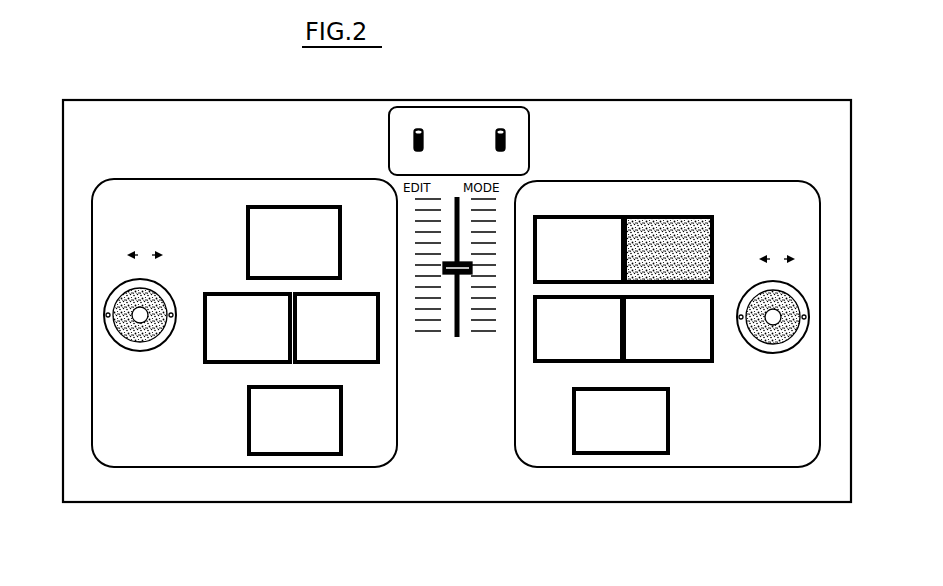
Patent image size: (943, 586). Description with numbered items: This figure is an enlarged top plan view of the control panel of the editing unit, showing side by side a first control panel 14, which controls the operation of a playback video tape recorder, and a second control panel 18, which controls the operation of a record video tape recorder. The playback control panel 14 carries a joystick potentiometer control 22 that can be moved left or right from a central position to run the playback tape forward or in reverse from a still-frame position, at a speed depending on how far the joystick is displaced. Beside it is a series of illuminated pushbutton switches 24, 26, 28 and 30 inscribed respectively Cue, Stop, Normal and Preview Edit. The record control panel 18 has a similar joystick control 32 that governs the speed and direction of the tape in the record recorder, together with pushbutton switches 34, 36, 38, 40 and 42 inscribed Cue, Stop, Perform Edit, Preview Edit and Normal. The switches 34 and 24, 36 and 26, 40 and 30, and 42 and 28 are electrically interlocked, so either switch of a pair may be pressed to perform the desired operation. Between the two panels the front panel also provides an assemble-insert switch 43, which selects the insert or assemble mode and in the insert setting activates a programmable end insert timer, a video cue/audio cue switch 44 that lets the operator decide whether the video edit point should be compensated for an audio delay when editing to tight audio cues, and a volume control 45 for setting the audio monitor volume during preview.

The first control panel 14 is at (117, 437).
The second control panel 18 is at (806, 436).
The joystick potentiometer control 22 is at (108, 323).
The pushbutton switch 24 is at (232, 349).
The pushbutton switch 26 is at (284, 214).
The pushbutton switch 28 is at (339, 447).
The pushbutton switch 30 is at (370, 350).
The joystick control 32 is at (797, 335).
The pushbutton switch 34 is at (538, 347).
The pushbutton switch 36 is at (570, 226).
The pushbutton switch 38 is at (686, 218).
The pushbutton switch 40 is at (707, 352).
The pushbutton switch 42 is at (580, 432).
The assemble-insert switch 43 is at (414, 138).
The video cue/audio cue switch 44 is at (505, 140).
The volume control 45 is at (450, 265).